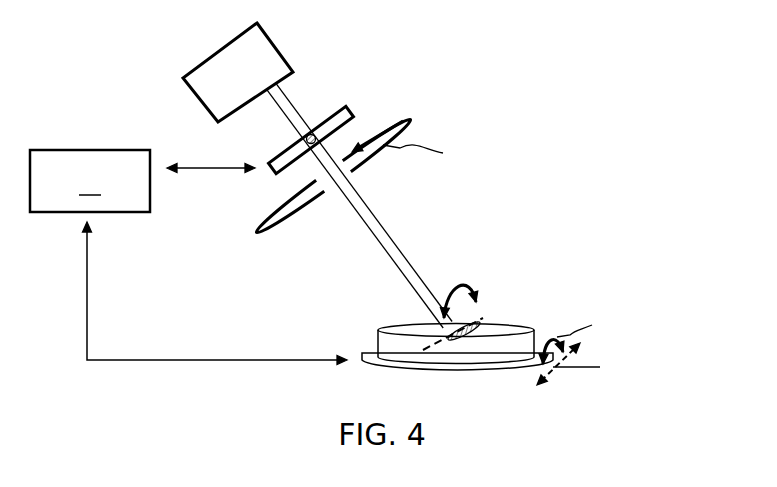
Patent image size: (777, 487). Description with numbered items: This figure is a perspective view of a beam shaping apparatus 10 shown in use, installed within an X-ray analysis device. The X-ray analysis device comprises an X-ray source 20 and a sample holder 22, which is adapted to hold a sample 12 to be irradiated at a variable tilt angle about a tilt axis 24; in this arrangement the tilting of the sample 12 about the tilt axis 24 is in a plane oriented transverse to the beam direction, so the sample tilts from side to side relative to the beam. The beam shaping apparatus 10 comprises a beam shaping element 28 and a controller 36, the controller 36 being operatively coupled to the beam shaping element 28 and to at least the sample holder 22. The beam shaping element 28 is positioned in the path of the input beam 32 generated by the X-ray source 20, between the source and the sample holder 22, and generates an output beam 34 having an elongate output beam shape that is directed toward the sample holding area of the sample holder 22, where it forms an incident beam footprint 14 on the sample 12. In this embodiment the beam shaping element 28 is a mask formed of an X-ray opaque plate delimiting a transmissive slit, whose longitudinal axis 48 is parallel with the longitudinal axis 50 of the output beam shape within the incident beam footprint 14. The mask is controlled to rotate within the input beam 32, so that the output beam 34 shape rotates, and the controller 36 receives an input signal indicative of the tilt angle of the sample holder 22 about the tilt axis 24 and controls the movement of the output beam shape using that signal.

The beam shaping apparatus 10 is at (157, 104).
The sample 12 is at (387, 325).
The incident beam spot 14 is at (438, 327).
The X-ray source 20 is at (270, 33).
The sample holder 22 is at (363, 352).
The tilt axis 24 is at (600, 367).
The beam shaping element 28 is at (330, 110).
The input beam 32 is at (264, 110).
The output beam 34 is at (330, 219).
The controller 36 is at (188, 257).
The longitudinal axis of the X-ray transmissive slit 48 is at (308, 133).
The longitudinal axis of the output beam shape 50 is at (485, 315).